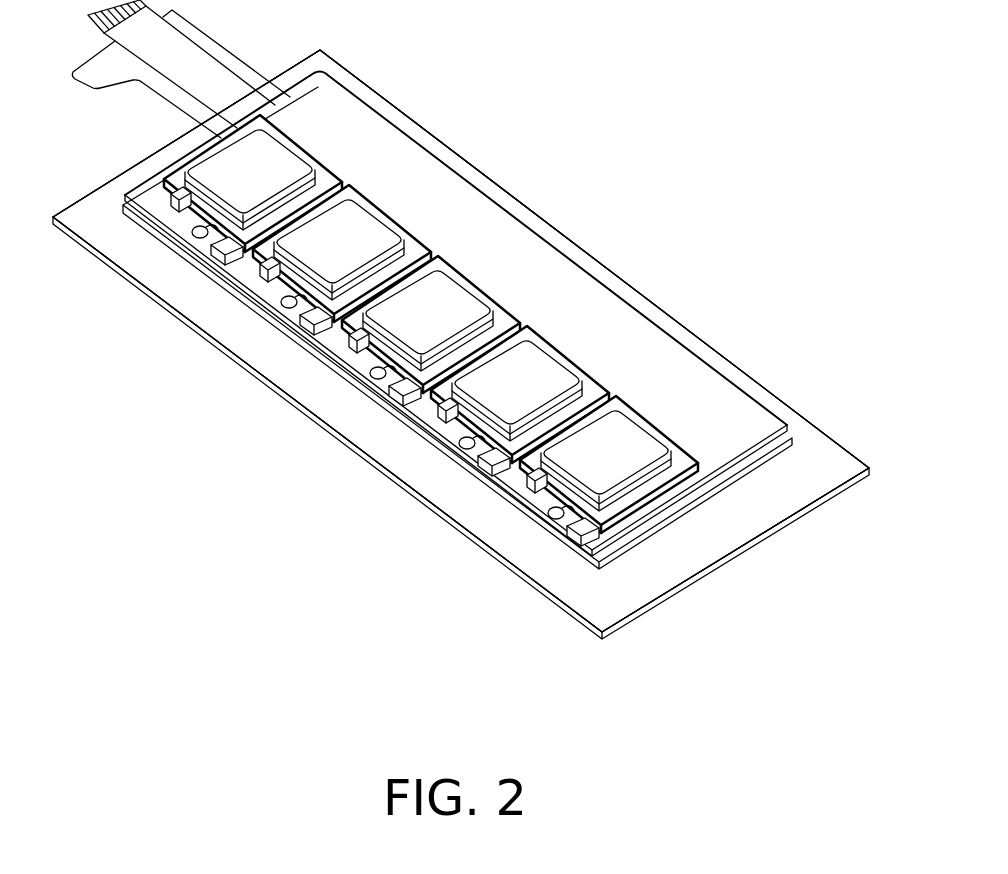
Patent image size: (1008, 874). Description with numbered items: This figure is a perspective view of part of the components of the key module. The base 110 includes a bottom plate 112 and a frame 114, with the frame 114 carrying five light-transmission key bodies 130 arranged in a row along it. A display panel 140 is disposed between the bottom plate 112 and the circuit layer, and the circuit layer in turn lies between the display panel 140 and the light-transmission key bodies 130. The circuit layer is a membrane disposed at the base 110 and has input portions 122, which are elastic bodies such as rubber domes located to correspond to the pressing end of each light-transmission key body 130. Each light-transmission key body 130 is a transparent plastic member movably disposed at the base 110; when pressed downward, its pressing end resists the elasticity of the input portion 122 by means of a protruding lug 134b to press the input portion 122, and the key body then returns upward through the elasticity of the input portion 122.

The base 110 is at (634, 222).
The bottom plate 112 is at (760, 510).
The frame 114 is at (640, 355).
The input portion 122 is at (390, 385).
The light-transmission key body 130 is at (362, 243).
The protruding lug 134b is at (382, 352).
The display panel 140 is at (603, 567).